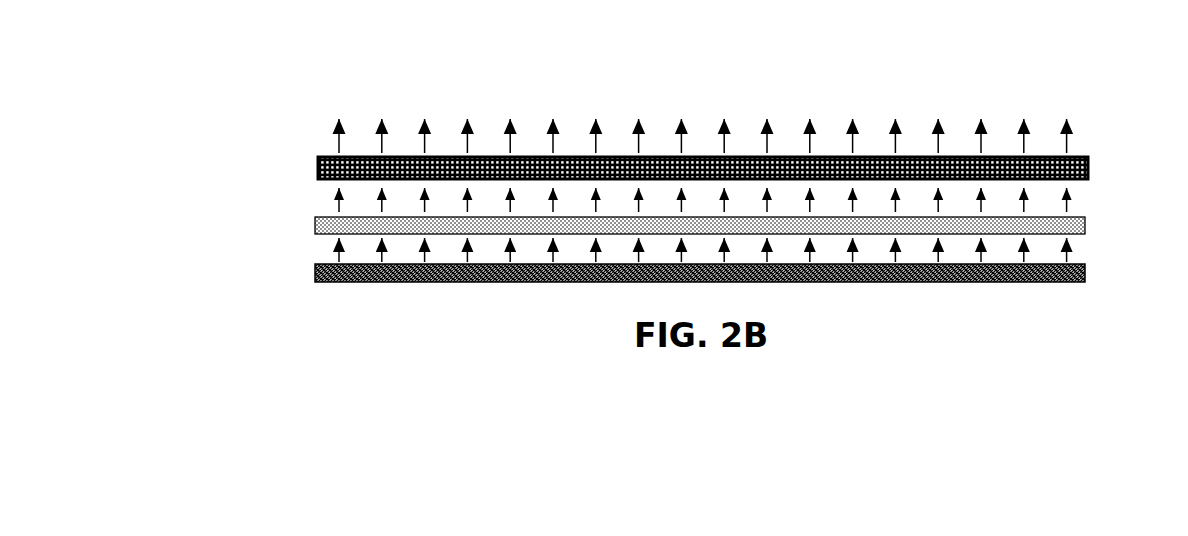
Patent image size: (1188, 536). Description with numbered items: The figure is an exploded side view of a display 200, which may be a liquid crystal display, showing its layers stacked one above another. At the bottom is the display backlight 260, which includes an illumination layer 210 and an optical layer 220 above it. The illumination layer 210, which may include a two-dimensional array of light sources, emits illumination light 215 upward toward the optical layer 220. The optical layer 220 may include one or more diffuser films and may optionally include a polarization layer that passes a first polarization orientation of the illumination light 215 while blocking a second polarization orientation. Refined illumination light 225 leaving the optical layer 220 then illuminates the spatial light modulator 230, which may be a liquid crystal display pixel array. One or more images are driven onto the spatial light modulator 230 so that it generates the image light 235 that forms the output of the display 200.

The display 200 is at (182, 135).
The spatial light modulator 230 is at (318, 166).
The optical layer 220 is at (315, 225).
The illumination layer 210 is at (315, 272).
The display backlight 260 is at (202, 222).
The image light 235 is at (1102, 118).
The refined illumination light 225 is at (1102, 183).
The illumination light 215 is at (1102, 233).